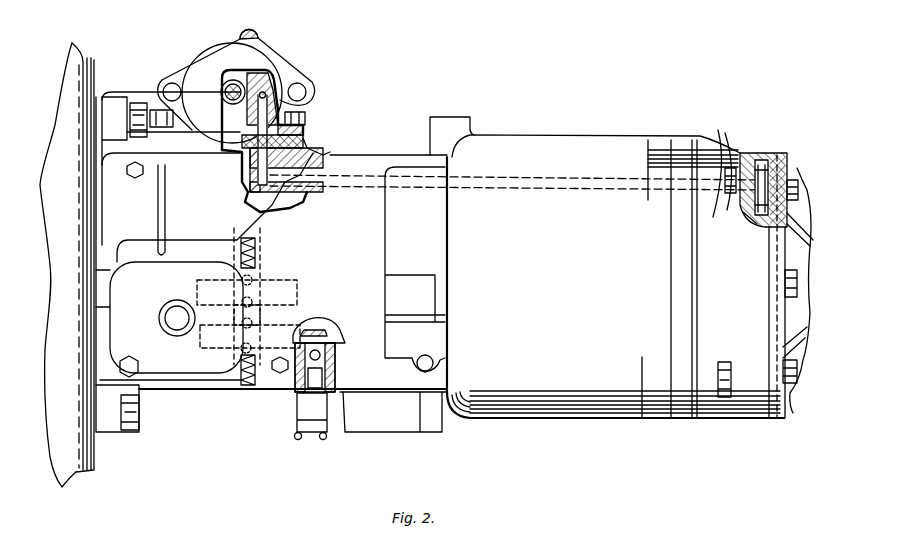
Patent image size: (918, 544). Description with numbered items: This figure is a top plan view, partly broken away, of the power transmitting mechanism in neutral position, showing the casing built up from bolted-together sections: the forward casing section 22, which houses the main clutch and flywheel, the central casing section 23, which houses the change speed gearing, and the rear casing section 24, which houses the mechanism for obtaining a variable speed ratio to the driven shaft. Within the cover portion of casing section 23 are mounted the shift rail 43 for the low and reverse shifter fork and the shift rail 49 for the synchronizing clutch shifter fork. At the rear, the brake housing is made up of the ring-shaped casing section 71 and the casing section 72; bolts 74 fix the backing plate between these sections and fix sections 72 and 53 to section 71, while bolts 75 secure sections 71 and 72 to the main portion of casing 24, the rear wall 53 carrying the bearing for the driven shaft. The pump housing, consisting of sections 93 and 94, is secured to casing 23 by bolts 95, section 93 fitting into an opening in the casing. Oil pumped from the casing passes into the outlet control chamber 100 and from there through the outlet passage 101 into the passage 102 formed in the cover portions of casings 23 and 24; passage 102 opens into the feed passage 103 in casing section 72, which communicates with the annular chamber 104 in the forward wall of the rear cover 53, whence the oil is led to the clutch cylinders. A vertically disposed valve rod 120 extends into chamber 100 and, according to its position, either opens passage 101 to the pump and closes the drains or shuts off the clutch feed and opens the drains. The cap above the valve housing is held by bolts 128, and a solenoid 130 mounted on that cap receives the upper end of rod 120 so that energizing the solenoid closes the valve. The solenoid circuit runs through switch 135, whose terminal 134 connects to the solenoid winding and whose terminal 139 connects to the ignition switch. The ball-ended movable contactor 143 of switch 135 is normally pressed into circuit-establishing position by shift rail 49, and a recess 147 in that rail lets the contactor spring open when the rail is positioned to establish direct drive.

The casing section 22 is at (68, 468).
The casing section 23 is at (195, 390).
The casing section 24 is at (596, 410).
The shift rail 43 is at (280, 285).
The shift rail 49 is at (268, 335).
The rear wall 53 is at (776, 152).
The casing section 71 is at (696, 412).
The casing section 72 is at (757, 419).
The bolts 74 is at (795, 172).
The bolts 75 is at (727, 410).
The pump housing section 93 is at (306, 142).
The pump housing section 94 is at (306, 128).
The bolts 95 is at (307, 116).
The outlet control chamber 100 is at (224, 113).
The outlet passage 101 is at (276, 75).
The passage 102 is at (338, 153).
The feed passage 103 is at (752, 214).
The annular recess or chamber 104 is at (770, 260).
The rod 120 is at (246, 74).
The bolts 128 is at (165, 84).
The solenoid 130 is at (206, 55).
The terminal 134 is at (292, 436).
The switch 135 is at (315, 418).
The terminal 139 is at (325, 440).
The movable contactor 143 is at (336, 352).
The recess 147 is at (342, 337).